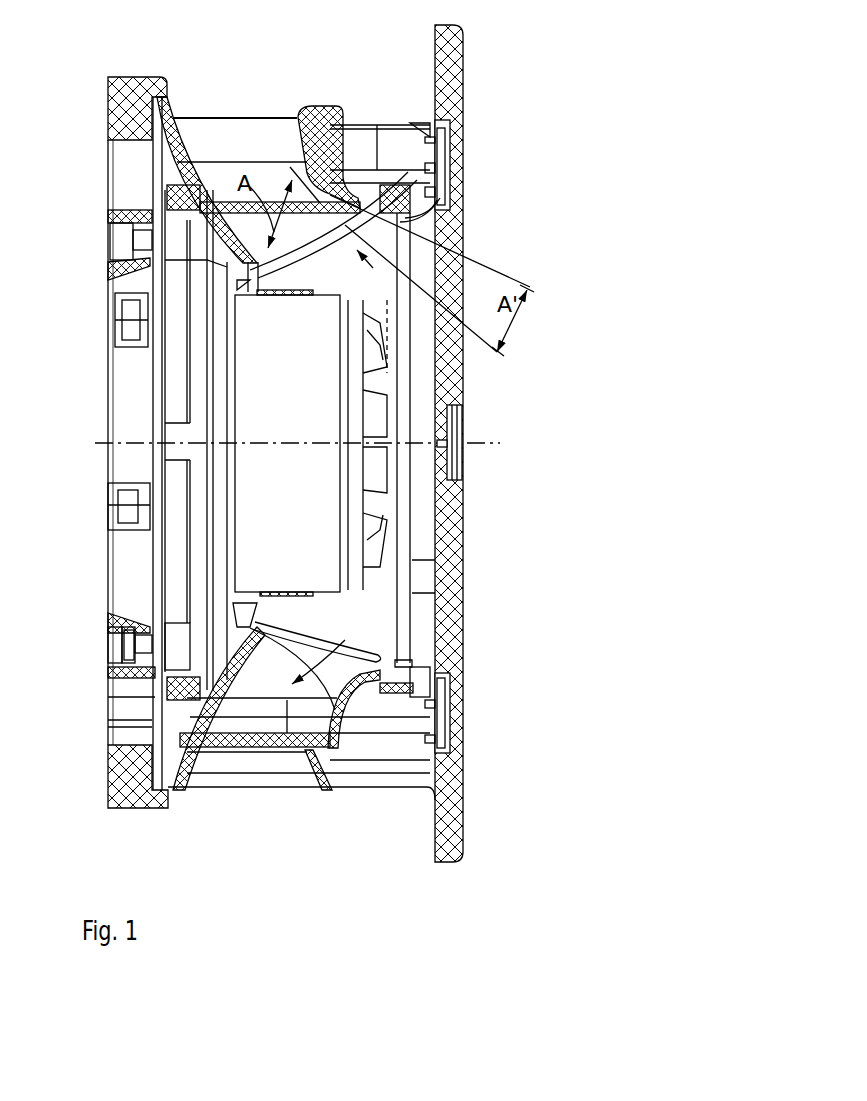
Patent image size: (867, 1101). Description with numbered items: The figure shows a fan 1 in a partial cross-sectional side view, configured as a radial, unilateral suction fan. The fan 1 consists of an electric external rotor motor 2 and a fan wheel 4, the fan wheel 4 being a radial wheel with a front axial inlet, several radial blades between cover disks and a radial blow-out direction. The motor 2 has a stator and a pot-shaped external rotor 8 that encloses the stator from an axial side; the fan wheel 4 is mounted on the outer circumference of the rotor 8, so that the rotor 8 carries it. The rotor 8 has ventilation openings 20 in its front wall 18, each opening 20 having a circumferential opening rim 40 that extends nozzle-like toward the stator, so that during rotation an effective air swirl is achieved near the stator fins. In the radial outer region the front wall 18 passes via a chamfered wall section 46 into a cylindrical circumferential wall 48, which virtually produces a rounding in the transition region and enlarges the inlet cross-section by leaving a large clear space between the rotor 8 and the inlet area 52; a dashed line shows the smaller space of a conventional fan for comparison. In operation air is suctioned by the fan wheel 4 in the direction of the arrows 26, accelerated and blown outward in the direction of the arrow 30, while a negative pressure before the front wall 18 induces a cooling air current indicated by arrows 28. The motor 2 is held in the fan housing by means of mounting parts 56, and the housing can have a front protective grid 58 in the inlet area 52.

The fan 1 is at (338, 882).
The electric external rotor motor 2 is at (226, 523).
The fan wheel 4 is at (376, 180).
The rotor 8 is at (298, 360).
The front wall 18 is at (432, 622).
The ventilation openings 20 is at (387, 425).
The arrows 26 is at (458, 232).
The arrows 28 is at (165, 278).
The arrow 30 is at (253, 25).
The opening rim 40 is at (385, 385).
The chamfered wall section 46 is at (350, 570).
The cylindrical circumferential wall 48 is at (312, 550).
The inlet area 52 is at (463, 220).
The mounting parts 56 is at (120, 641).
The front protective grid 58 is at (455, 586).